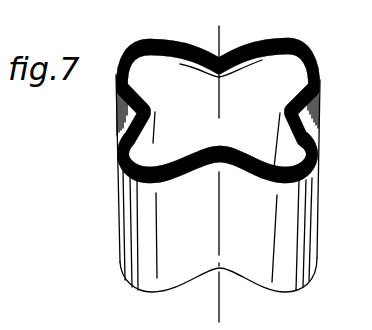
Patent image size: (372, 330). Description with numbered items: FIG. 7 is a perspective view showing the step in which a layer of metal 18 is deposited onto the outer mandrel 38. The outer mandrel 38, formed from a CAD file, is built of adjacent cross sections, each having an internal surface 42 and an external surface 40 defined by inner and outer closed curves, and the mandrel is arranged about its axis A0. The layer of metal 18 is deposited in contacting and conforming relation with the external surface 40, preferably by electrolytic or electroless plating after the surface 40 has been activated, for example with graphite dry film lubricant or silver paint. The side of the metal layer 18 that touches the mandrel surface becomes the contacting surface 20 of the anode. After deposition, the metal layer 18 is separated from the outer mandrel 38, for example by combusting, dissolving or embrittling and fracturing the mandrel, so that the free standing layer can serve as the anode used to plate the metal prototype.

The layer of metal 18 is at (195, 244).
The contacting surface of the anode 20 is at (150, 62).
The outer mandrel 38 is at (300, 57).
The external surface 40 is at (151, 44).
The internal surface 42 is at (284, 68).
The axis of the outer mandrel A0 is at (220, 45).